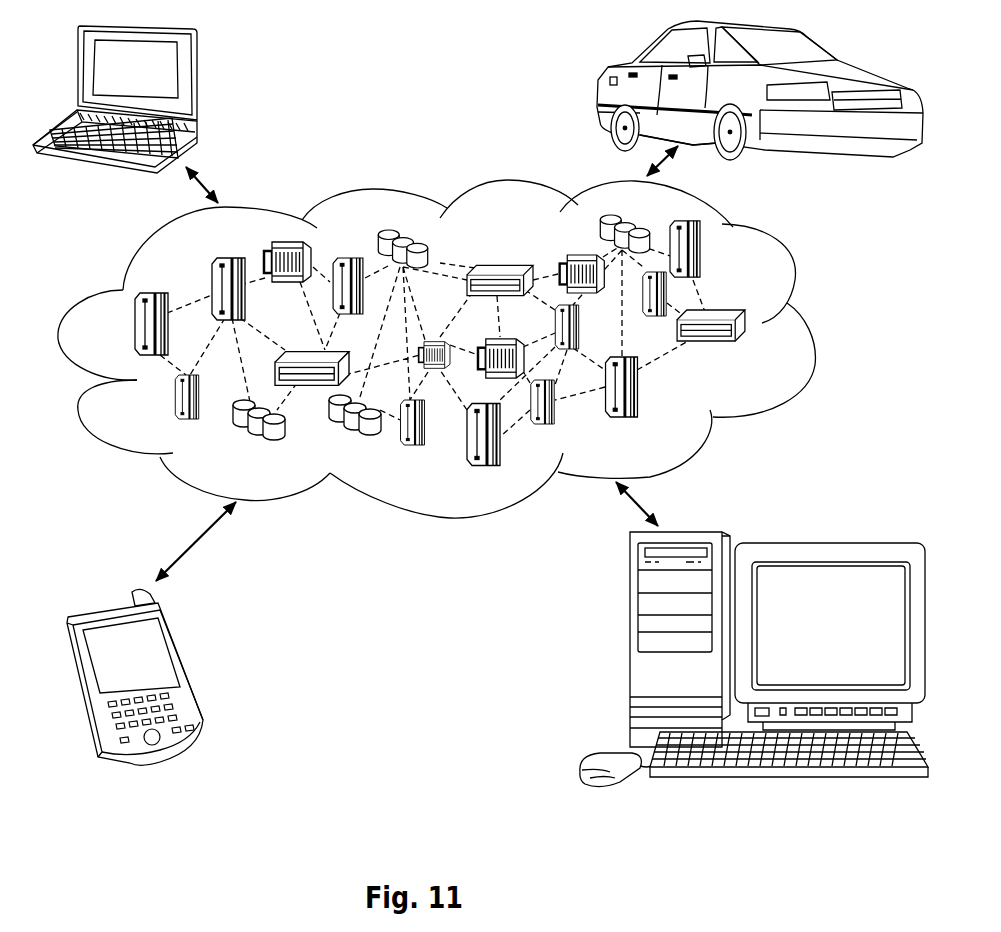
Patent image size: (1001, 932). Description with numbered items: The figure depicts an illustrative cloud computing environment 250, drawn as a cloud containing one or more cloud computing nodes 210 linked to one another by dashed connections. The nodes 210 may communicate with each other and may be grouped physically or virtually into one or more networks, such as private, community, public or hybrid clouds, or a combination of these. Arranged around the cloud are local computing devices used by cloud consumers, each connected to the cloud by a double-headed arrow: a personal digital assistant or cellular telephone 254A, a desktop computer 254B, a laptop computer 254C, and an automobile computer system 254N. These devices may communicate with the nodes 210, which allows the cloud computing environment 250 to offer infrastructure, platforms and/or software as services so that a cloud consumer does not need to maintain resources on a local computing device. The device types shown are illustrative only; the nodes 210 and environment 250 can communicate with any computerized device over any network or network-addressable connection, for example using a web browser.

The cloud computing nodes 210 is at (770, 348).
The cloud computing environment 250 is at (792, 283).
The personal digital assistant (PDA) or cellular telephone 254A is at (183, 668).
The desktop computer 254B is at (630, 647).
The laptop computer 254C is at (197, 77).
The automobile computer system 254N is at (598, 83).